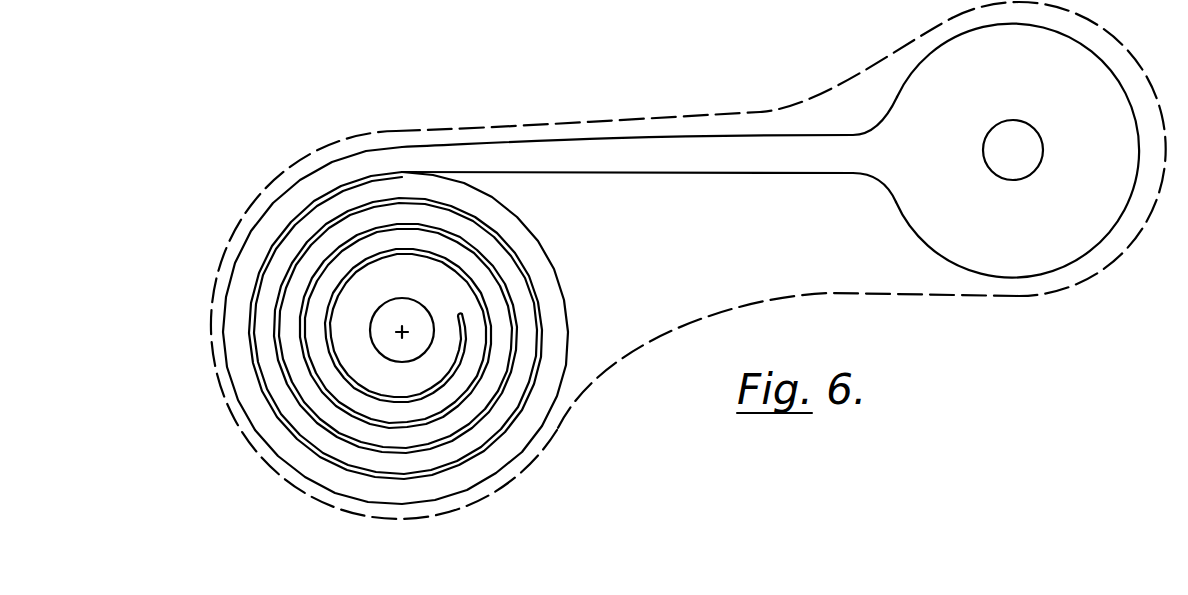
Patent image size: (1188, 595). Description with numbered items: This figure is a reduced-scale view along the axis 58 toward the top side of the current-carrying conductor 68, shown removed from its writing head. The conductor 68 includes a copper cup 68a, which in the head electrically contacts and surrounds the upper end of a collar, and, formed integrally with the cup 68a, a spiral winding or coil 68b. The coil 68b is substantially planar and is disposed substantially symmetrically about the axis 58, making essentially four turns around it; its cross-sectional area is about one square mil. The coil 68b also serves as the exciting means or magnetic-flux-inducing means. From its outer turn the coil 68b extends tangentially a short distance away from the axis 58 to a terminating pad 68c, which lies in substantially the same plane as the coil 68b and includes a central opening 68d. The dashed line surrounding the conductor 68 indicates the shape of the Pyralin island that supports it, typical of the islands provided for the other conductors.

The current-carrying conductor 68 is at (581, 113).
The copper cup 68a is at (440, 338).
The spiral winding or coil 68b is at (304, 180).
The terminating pad 68c is at (940, 222).
The central opening 68d is at (1053, 85).
The axis 58 is at (400, 331).